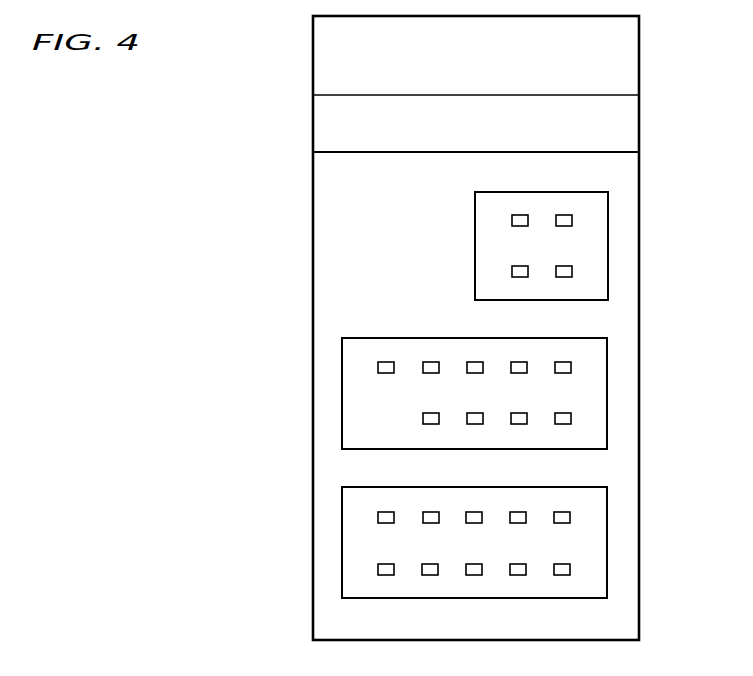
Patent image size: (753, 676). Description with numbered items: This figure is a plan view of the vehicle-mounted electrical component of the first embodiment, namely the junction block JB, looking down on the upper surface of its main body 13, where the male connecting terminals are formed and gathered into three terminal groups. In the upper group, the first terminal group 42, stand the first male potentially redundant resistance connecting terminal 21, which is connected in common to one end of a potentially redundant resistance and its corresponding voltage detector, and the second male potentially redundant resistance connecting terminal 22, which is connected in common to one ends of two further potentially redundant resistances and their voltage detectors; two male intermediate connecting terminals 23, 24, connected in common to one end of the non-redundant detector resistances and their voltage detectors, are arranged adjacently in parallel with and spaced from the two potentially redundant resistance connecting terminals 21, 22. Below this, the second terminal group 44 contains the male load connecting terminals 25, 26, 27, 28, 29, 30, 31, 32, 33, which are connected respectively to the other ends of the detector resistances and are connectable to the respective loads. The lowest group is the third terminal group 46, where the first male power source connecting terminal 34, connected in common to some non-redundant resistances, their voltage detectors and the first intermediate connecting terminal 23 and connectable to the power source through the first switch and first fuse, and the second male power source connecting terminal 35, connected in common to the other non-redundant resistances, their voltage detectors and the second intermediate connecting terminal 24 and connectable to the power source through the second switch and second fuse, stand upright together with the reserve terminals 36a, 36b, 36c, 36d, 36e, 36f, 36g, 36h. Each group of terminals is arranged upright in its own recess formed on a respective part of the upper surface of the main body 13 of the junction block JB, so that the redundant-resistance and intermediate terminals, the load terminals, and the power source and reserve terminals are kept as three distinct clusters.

The main body 13 is at (313, 243).
The first male potentially redundant resistance connecting terminal 21 is at (520, 266).
The second male potentially redundant resistance connecting terminal 22 is at (564, 266).
The first male intermediate connecting terminal 23 is at (520, 215).
The second male intermediate connecting terminal 24 is at (564, 215).
The male load connecting terminal 25 is at (386, 362).
The male load connecting terminal 26 is at (431, 362).
The male load connecting terminal 27 is at (431, 413).
The male load connecting terminal 28 is at (475, 362).
The male load connecting terminal 29 is at (475, 413).
The male load connecting terminal 30 is at (519, 362).
The male load connecting terminal 31 is at (519, 413).
The male load connecting terminal 32 is at (563, 362).
The male load connecting terminal 33 is at (563, 413).
The first male power source connecting terminal 34 is at (386, 512).
The second male power source connecting terminal 35 is at (386, 575).
The reserve terminal 36a is at (431, 512).
The reserve terminal 36b is at (430, 575).
The reserve terminal 36c is at (474, 512).
The reserve terminal 36d is at (474, 575).
The reserve terminal 36e is at (518, 512).
The reserve terminal 36f is at (518, 575).
The reserve terminal 36g is at (562, 512).
The reserve terminal 36h is at (562, 575).
The first terminal group 42 is at (600, 246).
The second terminal group 44 is at (599, 394).
The third terminal group 46 is at (599, 544).
The junction block JB is at (254, 180).